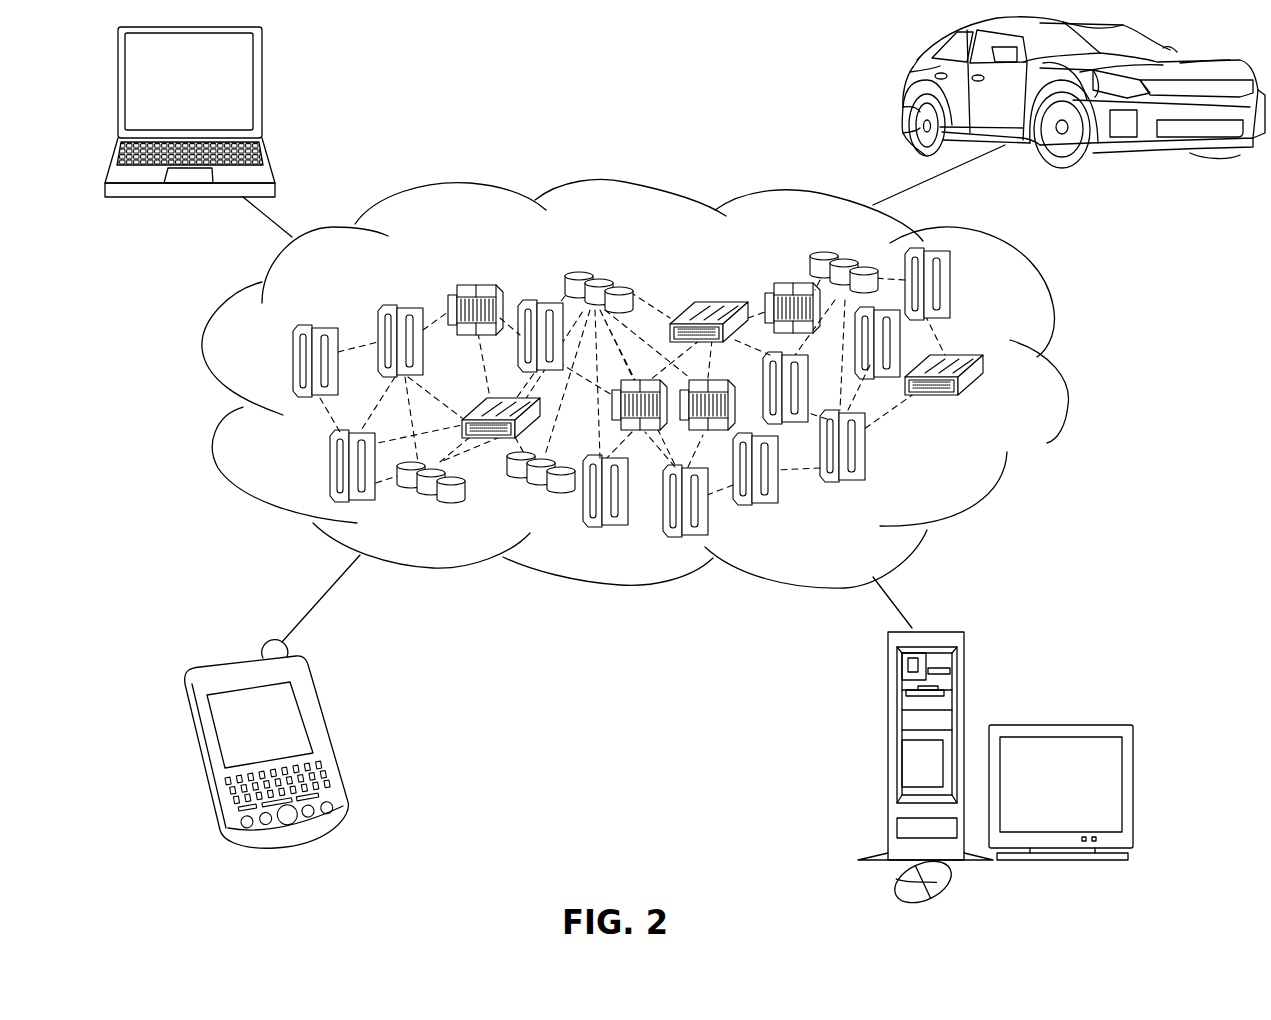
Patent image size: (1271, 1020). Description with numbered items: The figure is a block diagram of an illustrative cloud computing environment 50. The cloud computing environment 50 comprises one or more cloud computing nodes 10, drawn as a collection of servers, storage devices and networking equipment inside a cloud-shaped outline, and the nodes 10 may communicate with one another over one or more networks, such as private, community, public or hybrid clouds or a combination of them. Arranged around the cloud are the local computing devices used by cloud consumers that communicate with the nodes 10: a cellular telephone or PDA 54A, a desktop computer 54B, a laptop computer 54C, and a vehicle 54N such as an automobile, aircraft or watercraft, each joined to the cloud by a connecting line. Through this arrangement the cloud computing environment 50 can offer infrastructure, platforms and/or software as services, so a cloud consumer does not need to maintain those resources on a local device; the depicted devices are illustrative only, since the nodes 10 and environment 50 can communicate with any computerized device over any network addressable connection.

The cloud computing node 10 is at (966, 477).
The cloud computing environment 50 is at (1062, 375).
The cellular telephone or PDA 54A is at (315, 707).
The desktop computer 54B is at (888, 690).
The laptop computer 54C is at (262, 67).
The vehicle 54N is at (908, 79).